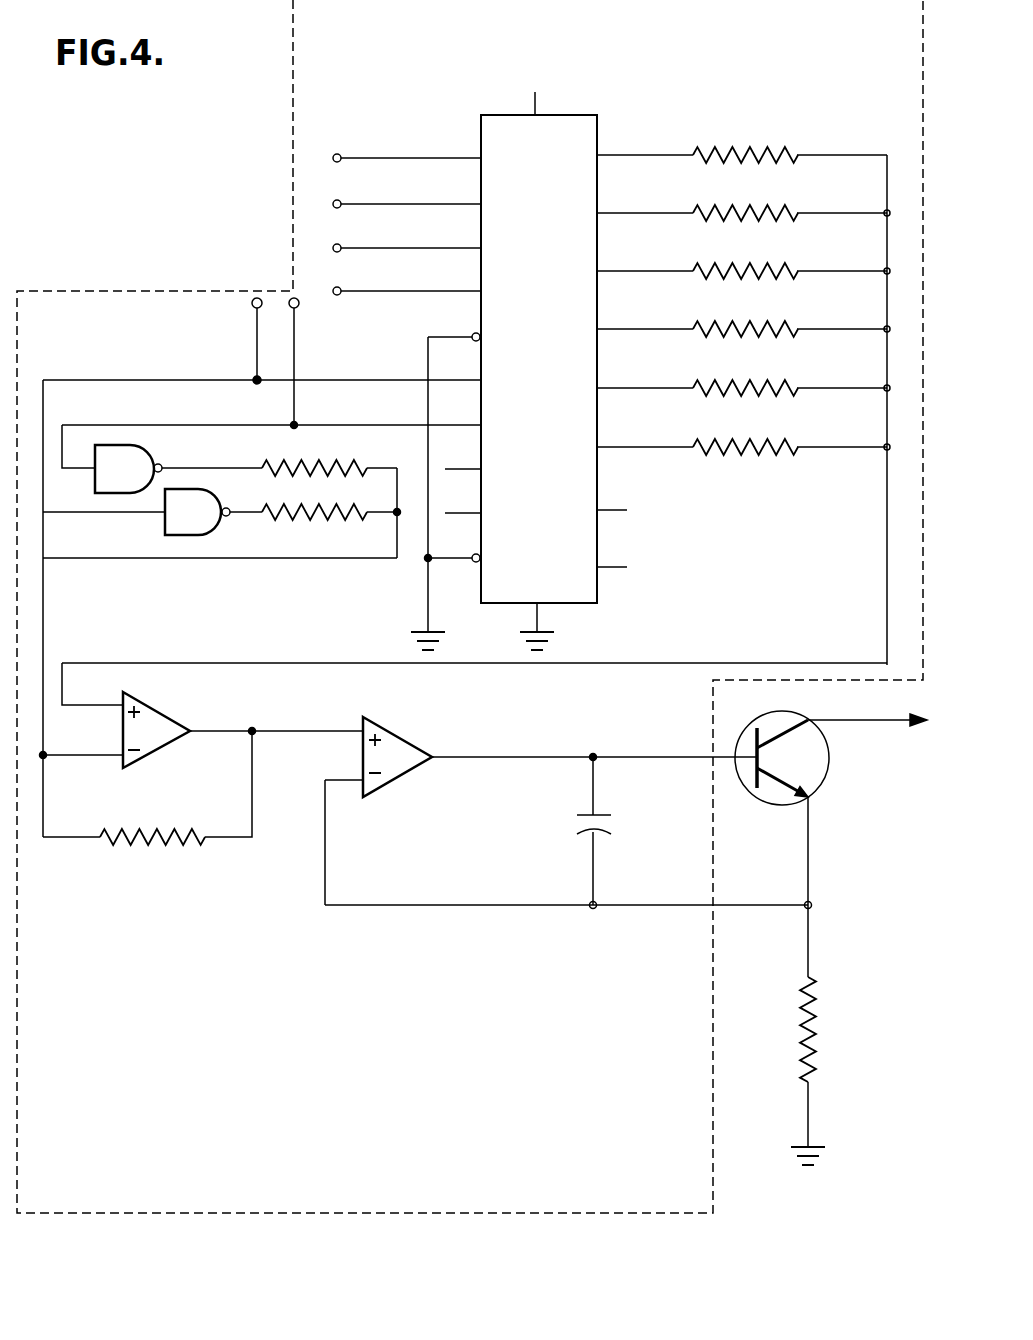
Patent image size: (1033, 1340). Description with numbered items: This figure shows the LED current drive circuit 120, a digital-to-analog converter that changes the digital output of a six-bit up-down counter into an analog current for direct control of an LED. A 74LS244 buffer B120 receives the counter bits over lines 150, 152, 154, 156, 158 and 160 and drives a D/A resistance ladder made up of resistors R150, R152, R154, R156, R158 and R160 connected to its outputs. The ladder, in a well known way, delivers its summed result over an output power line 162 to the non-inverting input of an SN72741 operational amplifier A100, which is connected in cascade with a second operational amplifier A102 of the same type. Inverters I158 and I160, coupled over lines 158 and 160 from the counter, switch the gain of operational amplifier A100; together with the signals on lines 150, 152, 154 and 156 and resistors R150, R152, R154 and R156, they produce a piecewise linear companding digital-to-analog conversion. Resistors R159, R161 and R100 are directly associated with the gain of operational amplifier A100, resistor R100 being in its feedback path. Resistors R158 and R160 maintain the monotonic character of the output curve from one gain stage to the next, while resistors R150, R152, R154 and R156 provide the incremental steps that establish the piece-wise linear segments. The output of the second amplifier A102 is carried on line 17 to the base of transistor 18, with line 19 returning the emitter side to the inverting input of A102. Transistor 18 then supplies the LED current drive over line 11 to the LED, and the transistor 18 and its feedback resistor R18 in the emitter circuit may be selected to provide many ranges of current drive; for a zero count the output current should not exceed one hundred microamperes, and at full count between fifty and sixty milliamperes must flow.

The LED current drive circuit 120 is at (293, 31).
The buffer B120 is at (577, 114).
The line 150 is at (380, 158).
The line 152 is at (380, 202).
The line 154 is at (380, 246).
The line 156 is at (380, 289).
The line 158 is at (256, 343).
The line 160 is at (296, 347).
The resistor R150 is at (783, 153).
The resistor R152 is at (783, 211).
The resistor R154 is at (783, 269).
The resistor R156 is at (783, 327).
The resistor R158 is at (783, 386).
The resistor R160 is at (783, 445).
The inverter I160 is at (147, 484).
The inverter I158 is at (217, 527).
The resistor R161 is at (325, 465).
The resistor R159 is at (322, 520).
The output power line 162 is at (886, 563).
The operational amplifier A100 is at (164, 720).
The resistor R100 is at (166, 832).
The second operational amplifier A102 is at (408, 746).
The output line 17 is at (646, 756).
The feedback line 19 is at (641, 906).
The line 11 is at (885, 722).
The transistor 18 is at (776, 806).
The feedback resistor R18 is at (800, 1016).